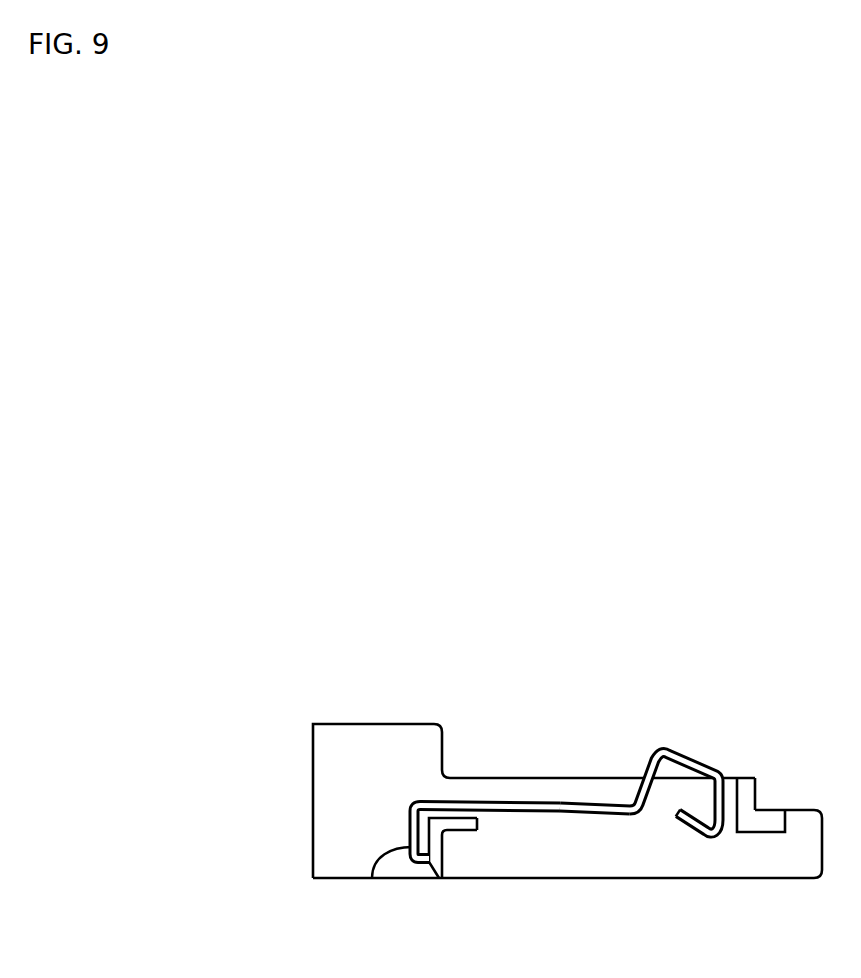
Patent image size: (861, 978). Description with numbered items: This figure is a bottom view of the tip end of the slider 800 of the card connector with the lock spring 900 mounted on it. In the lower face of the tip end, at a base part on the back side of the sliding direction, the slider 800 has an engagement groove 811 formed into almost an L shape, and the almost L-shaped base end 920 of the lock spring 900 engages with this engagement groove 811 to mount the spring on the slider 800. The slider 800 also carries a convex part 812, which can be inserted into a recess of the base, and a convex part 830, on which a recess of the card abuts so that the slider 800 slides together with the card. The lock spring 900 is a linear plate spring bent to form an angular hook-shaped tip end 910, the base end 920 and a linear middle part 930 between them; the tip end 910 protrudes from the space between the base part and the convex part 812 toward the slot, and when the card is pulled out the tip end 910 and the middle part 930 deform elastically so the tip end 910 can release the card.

The slider 800 is at (549, 752).
The engagement groove 811 is at (372, 879).
The convex part 812 is at (773, 817).
The convex part 830 is at (380, 733).
The lock spring 900 is at (557, 816).
The tip end 910 is at (665, 747).
The base end 920 is at (438, 879).
The middle part 930 is at (610, 816).